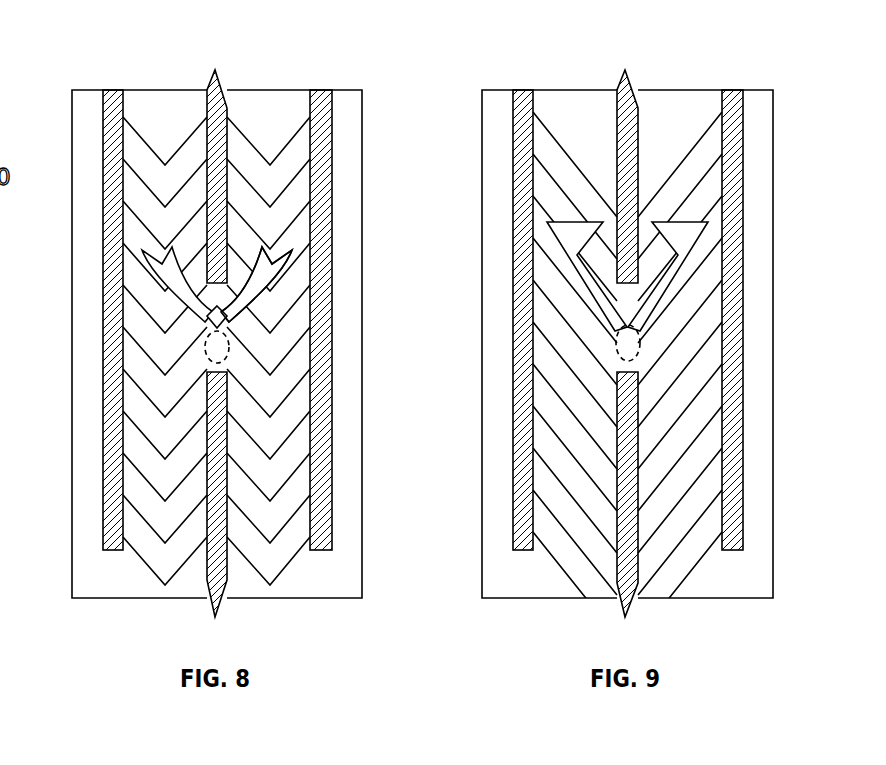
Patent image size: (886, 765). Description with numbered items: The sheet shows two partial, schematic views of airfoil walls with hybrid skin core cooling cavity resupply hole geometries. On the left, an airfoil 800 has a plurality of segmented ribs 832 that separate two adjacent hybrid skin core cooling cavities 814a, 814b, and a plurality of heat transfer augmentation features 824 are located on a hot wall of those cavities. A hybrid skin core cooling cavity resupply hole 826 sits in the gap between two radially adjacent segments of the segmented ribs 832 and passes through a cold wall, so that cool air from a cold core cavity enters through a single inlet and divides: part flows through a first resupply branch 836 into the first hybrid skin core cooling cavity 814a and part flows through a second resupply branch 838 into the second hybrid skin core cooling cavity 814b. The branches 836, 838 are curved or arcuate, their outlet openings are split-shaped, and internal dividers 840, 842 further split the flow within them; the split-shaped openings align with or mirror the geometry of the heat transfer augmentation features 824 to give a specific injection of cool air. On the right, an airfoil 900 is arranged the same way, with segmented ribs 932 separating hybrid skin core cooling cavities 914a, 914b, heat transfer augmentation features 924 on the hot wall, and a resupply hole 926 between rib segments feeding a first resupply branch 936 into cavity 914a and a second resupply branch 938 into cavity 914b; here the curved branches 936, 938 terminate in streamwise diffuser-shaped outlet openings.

In FIG. 8, the airfoil 800 is at (374, 184).
In FIG. 8, the first hybrid skin core cooling cavity 814a is at (172, 107).
In FIG. 8, the second hybrid skin core cooling cavity 814b is at (269, 107).
In FIG. 8, the heat transfer augmentation features 824 is at (148, 560).
In FIG. 8, the hybrid skin core cooling cavity resupply hole 826 is at (205, 350).
In FIG. 8, the segmented ribs 832 is at (106, 145).
In FIG. 8, the first resupply branch 836 is at (150, 267).
In FIG. 8, the second resupply branch 838 is at (292, 262).
In FIG. 8, the internal divider 840 is at (190, 300).
In FIG. 8, the internal divider 842 is at (266, 300).
In FIG. 9, the airfoil 900 is at (784, 184).
In FIG. 9, the first hybrid skin core cooling cavity 914a is at (582, 107).
In FIG. 9, the second hybrid skin core cooling cavity 914b is at (679, 107).
In FIG. 9, the heat transfer augmentation features 924 is at (558, 560).
In FIG. 9, the hybrid skin core cooling cavity resupply hole 926 is at (616, 350).
In FIG. 9, the segmented ribs 932 is at (516, 145).
In FIG. 9, the first resupply branch 936 is at (596, 300).
In FIG. 9, the second resupply branch 938 is at (680, 270).